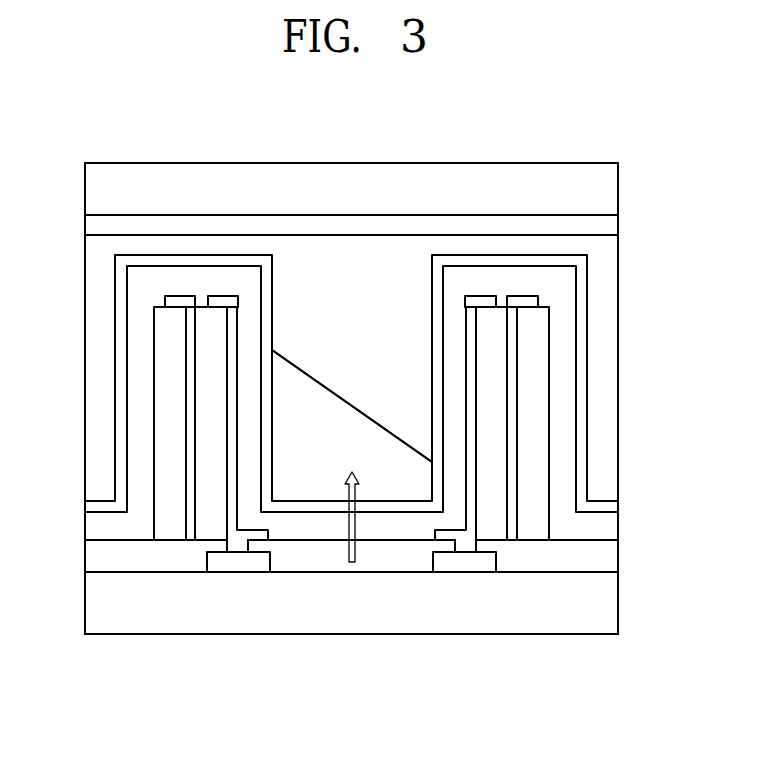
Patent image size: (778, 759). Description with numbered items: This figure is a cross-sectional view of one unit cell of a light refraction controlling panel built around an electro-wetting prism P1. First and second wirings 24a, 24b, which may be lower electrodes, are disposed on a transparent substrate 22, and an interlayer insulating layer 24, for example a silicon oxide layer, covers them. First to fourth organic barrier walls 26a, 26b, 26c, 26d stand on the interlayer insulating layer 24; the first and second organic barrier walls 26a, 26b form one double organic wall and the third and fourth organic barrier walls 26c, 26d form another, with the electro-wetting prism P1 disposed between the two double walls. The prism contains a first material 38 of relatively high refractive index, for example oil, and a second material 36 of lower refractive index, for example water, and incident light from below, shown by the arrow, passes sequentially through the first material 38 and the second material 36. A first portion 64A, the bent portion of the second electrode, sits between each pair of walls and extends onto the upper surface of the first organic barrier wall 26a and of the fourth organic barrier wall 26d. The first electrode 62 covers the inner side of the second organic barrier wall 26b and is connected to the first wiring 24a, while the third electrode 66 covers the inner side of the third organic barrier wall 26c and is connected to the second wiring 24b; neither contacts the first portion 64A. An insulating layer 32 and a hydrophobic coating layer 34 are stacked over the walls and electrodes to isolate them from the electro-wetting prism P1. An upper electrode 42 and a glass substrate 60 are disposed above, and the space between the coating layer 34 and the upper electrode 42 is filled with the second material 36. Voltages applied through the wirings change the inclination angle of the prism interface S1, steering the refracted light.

The transparent substrate 22 is at (618, 603).
The interlayer insulating layer 24 is at (618, 560).
The first wiring 24a is at (237, 565).
The second wiring 24b is at (469, 565).
The first organic barrier wall 26a is at (165, 387).
The second organic barrier wall 26b is at (210, 432).
The third organic barrier wall 26c is at (493, 328).
The fourth organic barrier wall 26d is at (538, 411).
The insulating layer 32 is at (95, 526).
The coating layer 34 is at (120, 301).
The second material 36 is at (398, 413).
The first material 38 is at (320, 492).
The upper electrode 42 is at (618, 229).
The glass substrate 60 is at (618, 190).
The first electrode 62 is at (223, 298).
The first portion 64A is at (171, 298).
The third electrode 66 is at (478, 298).
The prism interface S1 is at (333, 392).
The electro-wetting prism P1 is at (310, 687).